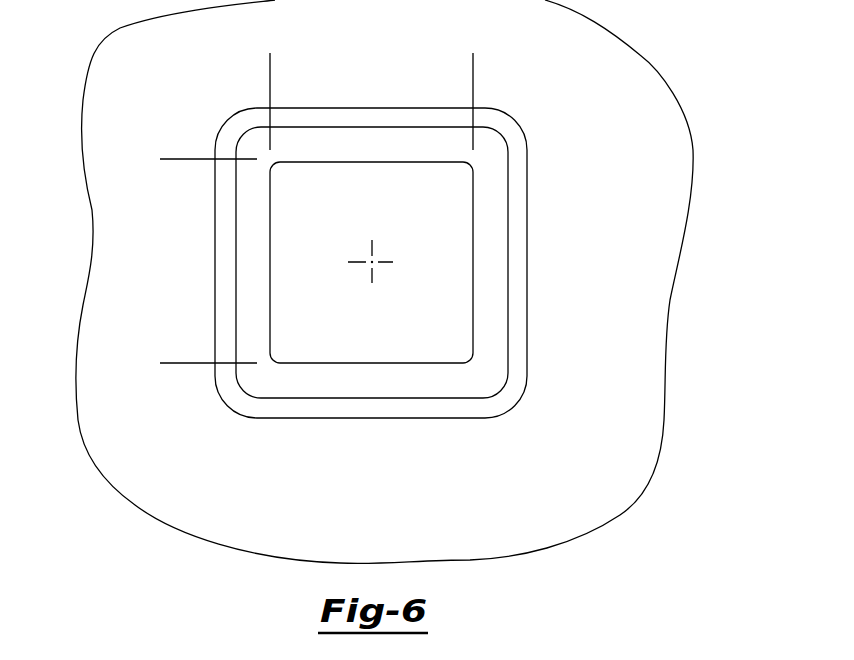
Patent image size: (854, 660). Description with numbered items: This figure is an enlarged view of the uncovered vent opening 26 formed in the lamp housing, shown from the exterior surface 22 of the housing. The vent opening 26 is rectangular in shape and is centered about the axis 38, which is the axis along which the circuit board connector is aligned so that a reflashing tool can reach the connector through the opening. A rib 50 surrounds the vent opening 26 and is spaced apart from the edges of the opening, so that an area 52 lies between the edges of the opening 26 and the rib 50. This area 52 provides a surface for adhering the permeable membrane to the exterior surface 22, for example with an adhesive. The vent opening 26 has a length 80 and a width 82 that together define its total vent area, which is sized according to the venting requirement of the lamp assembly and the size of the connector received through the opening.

The exterior surface 22 is at (583, 330).
The rib 50 is at (516, 117).
The area 52 is at (485, 233).
The vent opening 26 is at (476, 193).
The axis 38 is at (372, 262).
The length 80 is at (182, 159).
The width 82 is at (473, 73).